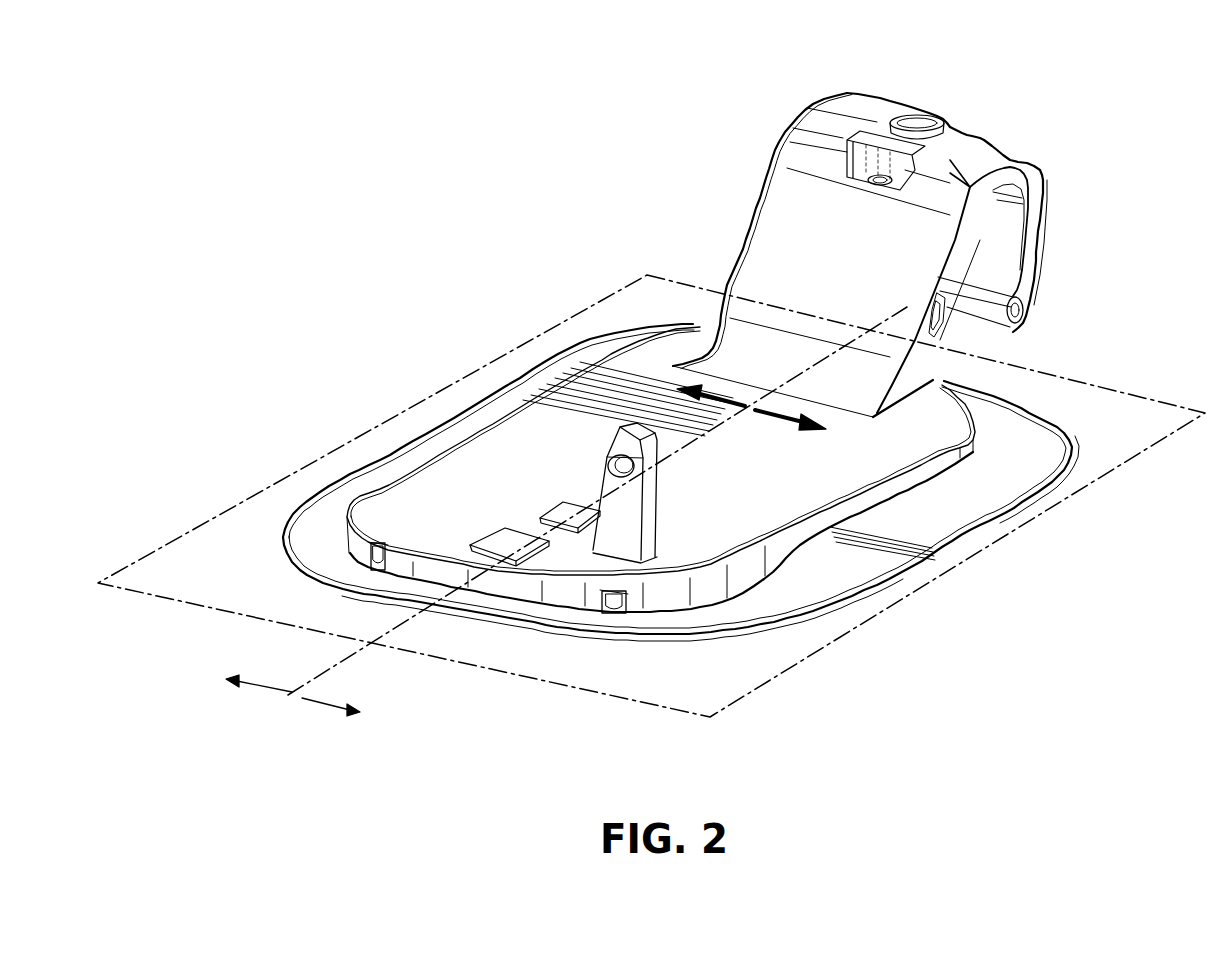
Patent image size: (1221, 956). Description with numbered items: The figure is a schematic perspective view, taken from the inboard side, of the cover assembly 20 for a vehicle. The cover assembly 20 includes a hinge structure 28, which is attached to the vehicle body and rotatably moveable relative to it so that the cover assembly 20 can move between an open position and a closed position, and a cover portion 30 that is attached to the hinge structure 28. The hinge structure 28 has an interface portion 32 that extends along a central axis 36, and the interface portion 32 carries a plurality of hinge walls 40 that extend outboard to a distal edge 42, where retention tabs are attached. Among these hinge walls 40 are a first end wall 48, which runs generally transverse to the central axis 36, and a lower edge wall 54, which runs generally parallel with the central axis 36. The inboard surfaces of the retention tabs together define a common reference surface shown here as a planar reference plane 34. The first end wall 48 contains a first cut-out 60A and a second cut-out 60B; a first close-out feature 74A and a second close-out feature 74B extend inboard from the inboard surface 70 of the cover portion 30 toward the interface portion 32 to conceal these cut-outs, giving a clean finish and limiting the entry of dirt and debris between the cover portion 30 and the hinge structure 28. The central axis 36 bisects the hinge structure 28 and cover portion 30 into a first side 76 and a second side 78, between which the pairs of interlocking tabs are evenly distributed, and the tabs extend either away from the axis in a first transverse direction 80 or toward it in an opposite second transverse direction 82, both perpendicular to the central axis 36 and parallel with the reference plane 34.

The cover assembly 20 is at (541, 263).
The hinge structure 28 is at (747, 225).
The cover portion 30 is at (377, 460).
The interface portion 32 is at (972, 413).
The reference plane 34 is at (195, 603).
The central axis 36 is at (345, 688).
The hinge walls 40 is at (800, 540).
The distal edge 42 is at (933, 477).
The first end wall 48 is at (560, 598).
The lower edge wall 54 is at (872, 500).
The first cut-out 60A is at (395, 548).
The second cut-out 60B is at (615, 592).
The inboard surface 70 is at (782, 610).
The first close-out feature 74A is at (375, 565).
The second close-out feature 74B is at (612, 612).
The first side 76 is at (712, 395).
The second side 78 is at (787, 418).
The first transverse direction 80 is at (300, 705).
The second transverse direction 82 is at (275, 692).